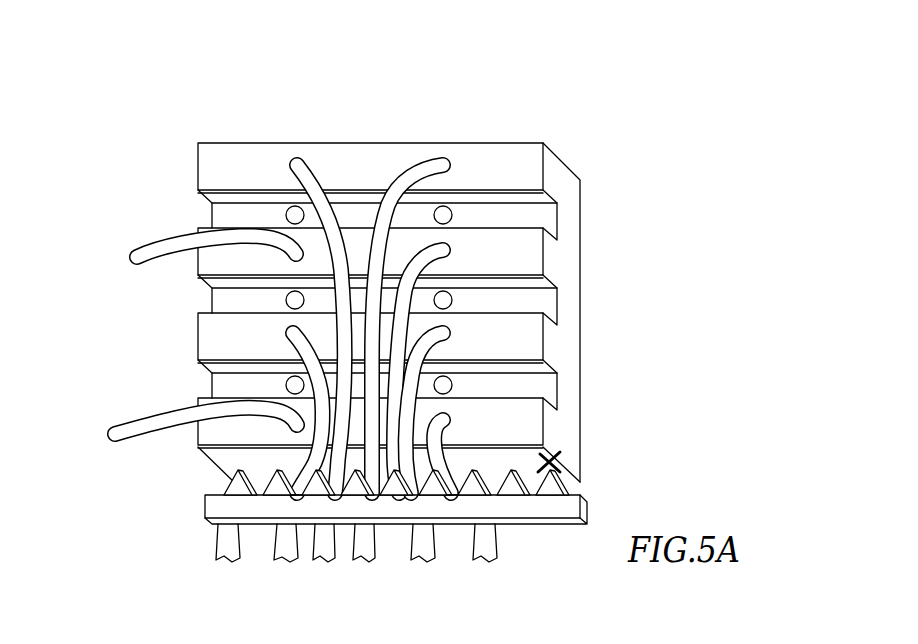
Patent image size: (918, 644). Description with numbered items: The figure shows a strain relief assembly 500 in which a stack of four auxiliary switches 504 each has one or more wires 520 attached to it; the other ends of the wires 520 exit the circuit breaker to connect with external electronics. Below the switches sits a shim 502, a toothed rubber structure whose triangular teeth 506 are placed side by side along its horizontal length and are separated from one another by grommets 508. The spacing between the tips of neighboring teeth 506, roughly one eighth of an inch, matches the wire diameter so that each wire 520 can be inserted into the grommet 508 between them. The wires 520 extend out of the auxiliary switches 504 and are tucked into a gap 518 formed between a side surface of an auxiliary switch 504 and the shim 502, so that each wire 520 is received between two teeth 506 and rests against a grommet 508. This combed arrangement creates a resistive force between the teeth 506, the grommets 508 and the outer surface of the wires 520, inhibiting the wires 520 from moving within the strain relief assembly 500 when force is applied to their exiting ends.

The strain relief assembly 500 is at (572, 112).
The shim 502 is at (205, 515).
The auxiliary switch 504 is at (243, 155).
The tooth 506 is at (240, 490).
The grommet 508 is at (297, 495).
The gap 518 is at (551, 461).
The wire 520 is at (307, 162).